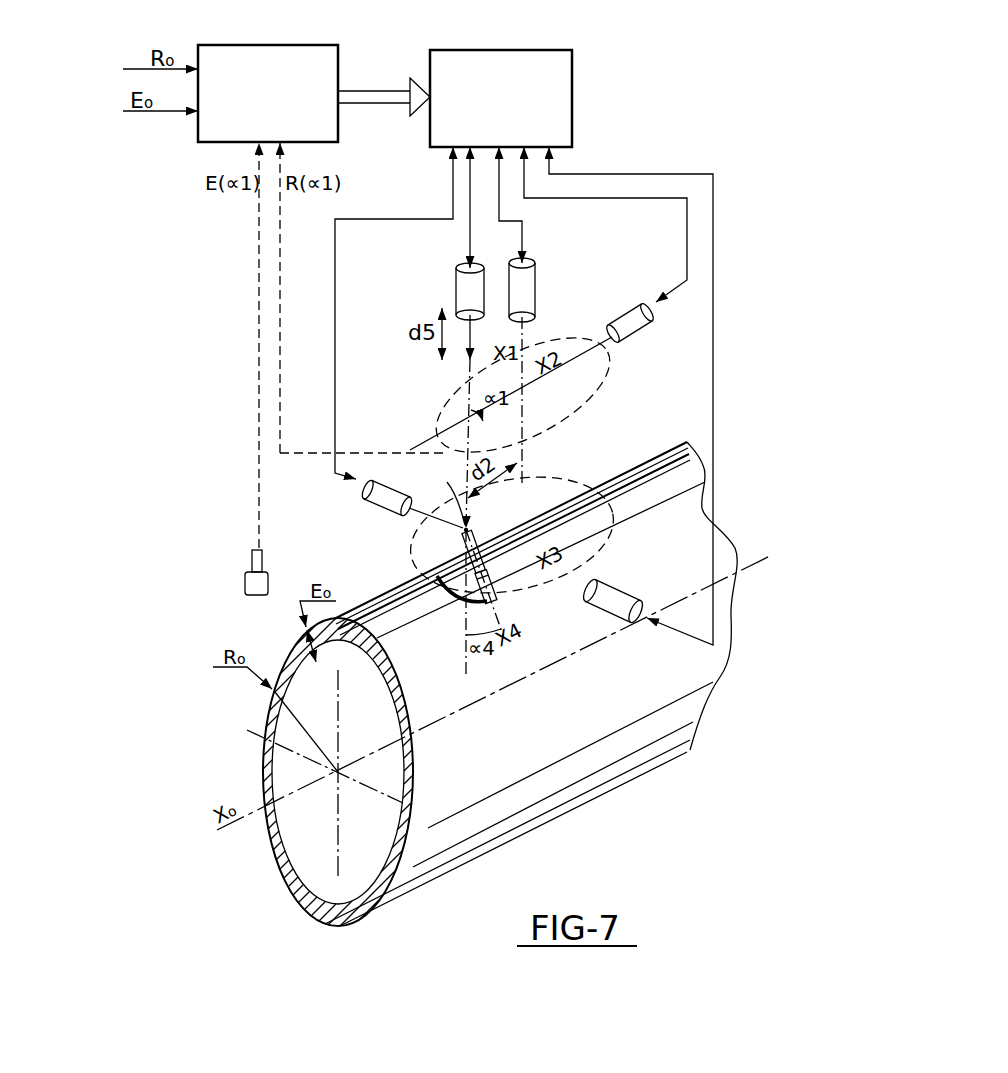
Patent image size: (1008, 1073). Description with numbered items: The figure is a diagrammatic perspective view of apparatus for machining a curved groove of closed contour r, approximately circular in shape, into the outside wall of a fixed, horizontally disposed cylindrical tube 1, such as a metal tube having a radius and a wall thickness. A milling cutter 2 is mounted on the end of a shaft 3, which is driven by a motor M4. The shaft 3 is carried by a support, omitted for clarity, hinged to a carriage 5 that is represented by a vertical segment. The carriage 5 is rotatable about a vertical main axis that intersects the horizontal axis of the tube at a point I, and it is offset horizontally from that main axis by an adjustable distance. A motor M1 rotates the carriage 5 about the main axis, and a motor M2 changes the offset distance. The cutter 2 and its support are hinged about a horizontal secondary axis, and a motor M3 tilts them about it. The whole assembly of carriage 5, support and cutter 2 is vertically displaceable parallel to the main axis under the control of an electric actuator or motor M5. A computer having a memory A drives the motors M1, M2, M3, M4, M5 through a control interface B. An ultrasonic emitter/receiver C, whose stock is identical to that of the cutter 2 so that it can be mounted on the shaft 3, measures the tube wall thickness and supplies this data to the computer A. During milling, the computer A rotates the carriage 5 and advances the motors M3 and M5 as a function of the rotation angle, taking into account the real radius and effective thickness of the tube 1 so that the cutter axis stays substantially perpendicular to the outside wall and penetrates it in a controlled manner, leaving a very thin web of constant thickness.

The cylindrical tube 1 is at (602, 783).
The milling cutter 2 is at (500, 578).
The shaft 3 is at (458, 556).
The carriage 5 is at (446, 520).
The computer A is at (268, 93).
The control interface B is at (501, 98).
The ultrasonic emitter/receiver C is at (268, 580).
The motor M1 is at (535, 296).
The motor M2 is at (626, 310).
The motor M3 is at (600, 592).
The motor M4 is at (405, 486).
The electric actuator or motor M5 is at (456, 292).
The focal point F is at (456, 492).
The point O is at (478, 530).
The intersection point I is at (521, 541).
The curved groove of closed contour r is at (612, 507).